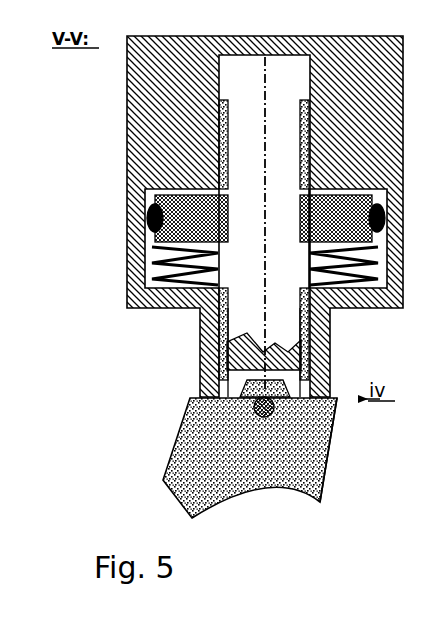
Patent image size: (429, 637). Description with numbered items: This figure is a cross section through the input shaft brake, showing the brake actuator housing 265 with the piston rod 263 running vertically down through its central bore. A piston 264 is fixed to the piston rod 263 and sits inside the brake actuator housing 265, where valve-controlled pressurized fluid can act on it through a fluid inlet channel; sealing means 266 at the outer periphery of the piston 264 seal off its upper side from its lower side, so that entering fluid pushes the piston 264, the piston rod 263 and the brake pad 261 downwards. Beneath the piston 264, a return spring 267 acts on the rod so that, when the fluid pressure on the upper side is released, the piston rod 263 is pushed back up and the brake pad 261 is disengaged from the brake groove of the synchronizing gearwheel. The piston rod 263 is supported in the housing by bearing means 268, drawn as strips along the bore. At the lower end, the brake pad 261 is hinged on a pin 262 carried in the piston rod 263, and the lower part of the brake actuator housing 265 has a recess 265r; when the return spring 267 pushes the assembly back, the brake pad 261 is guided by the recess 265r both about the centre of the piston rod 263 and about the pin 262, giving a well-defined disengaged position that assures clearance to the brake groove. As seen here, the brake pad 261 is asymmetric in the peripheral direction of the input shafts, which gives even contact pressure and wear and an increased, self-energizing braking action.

The brake pad 261 is at (197, 447).
The pin 262 is at (252, 408).
The piston rod 263 is at (244, 326).
The piston 264 is at (177, 200).
The brake actuator housing 265 is at (199, 333).
The recess 265r is at (319, 402).
The sealing means 266 is at (146, 217).
The return spring 267 is at (162, 273).
The bearing means 268 is at (217, 128).